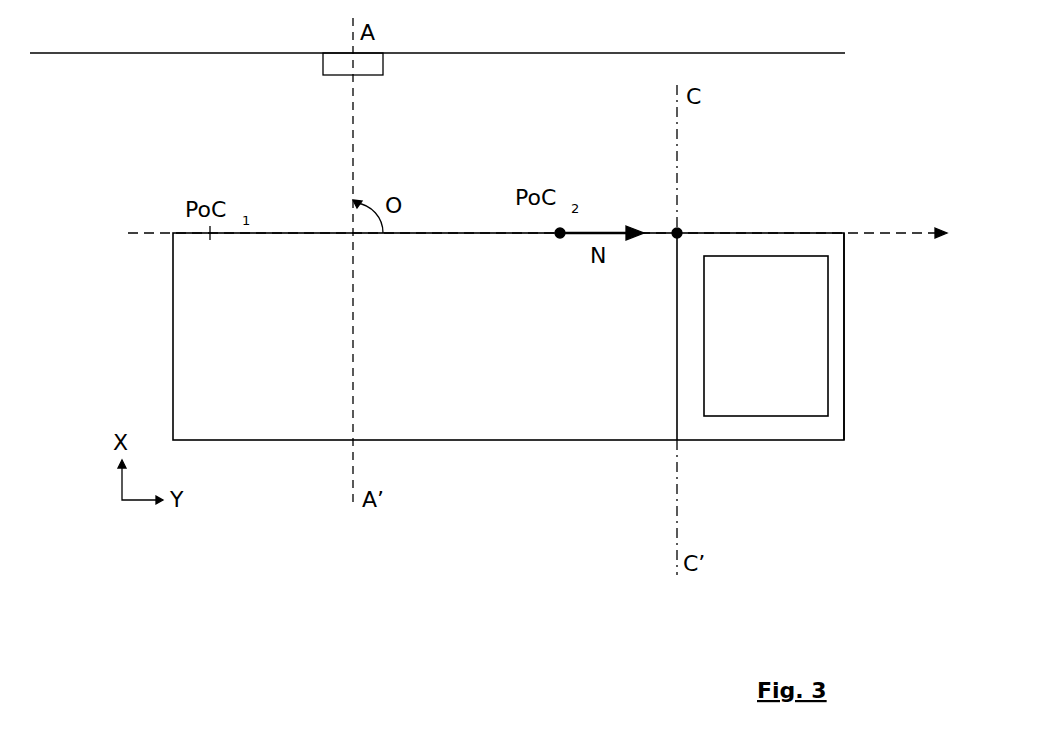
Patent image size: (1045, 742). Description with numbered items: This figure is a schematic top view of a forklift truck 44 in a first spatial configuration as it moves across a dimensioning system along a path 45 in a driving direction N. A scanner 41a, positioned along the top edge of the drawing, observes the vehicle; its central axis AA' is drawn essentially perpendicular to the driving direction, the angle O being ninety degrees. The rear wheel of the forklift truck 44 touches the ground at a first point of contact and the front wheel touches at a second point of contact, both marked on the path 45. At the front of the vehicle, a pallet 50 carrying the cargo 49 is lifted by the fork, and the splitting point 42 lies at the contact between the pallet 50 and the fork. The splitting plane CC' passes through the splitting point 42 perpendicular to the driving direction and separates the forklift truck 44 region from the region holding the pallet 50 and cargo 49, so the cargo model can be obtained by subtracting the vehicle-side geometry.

The scanner 41a is at (324, 68).
The path 45 is at (172, 232).
The forklift truck 44 is at (492, 443).
The pallet 50 is at (782, 443).
The cargo 49 is at (828, 310).
The splitting point 42 is at (680, 231).